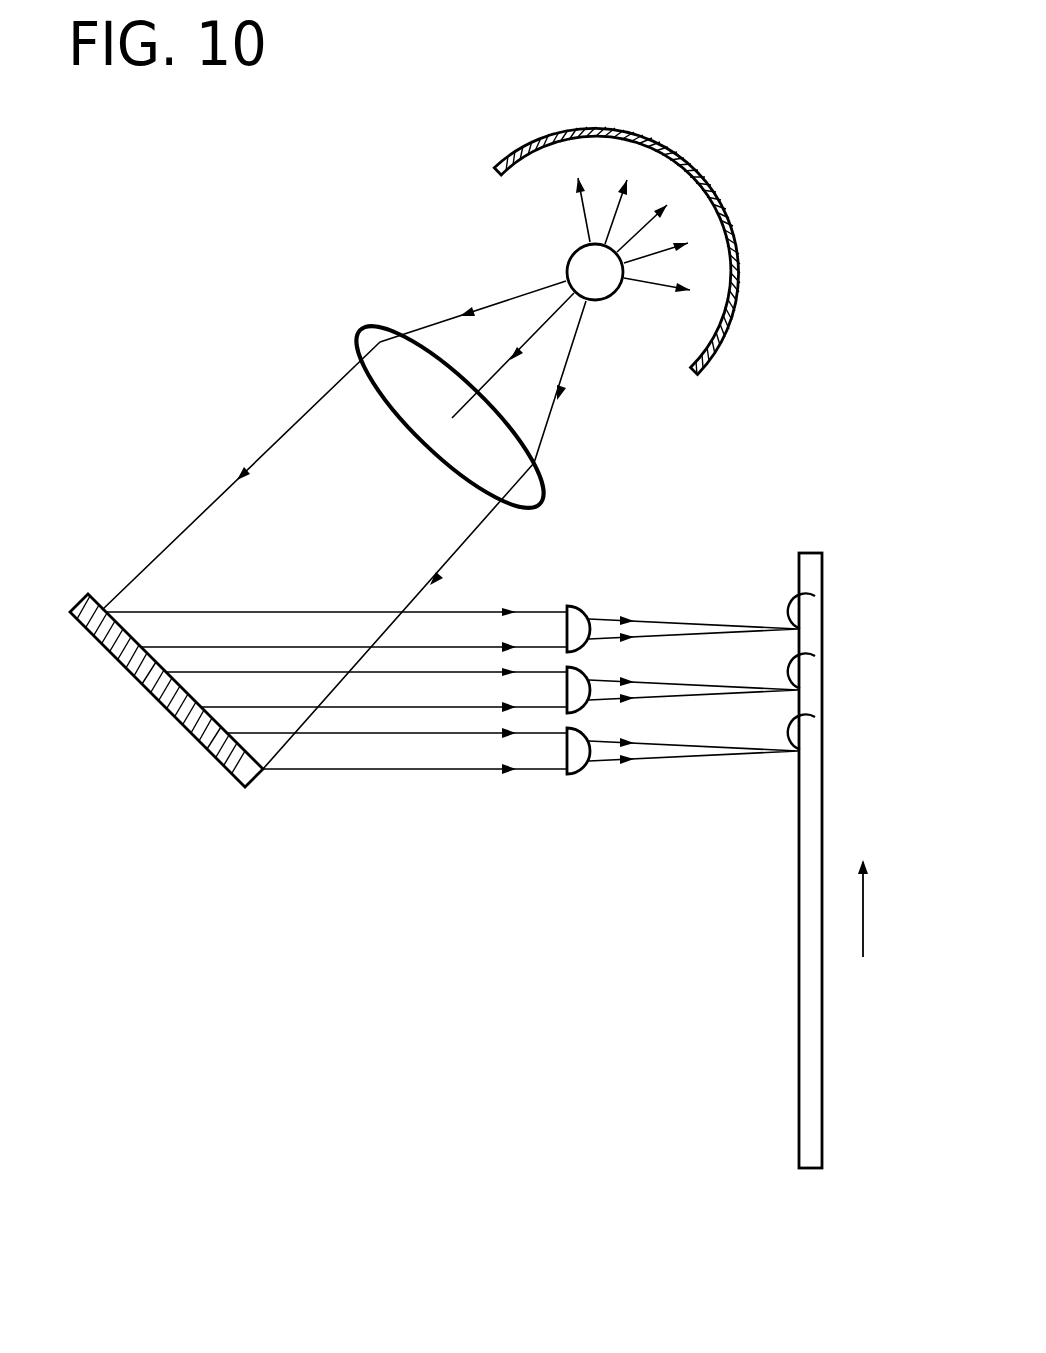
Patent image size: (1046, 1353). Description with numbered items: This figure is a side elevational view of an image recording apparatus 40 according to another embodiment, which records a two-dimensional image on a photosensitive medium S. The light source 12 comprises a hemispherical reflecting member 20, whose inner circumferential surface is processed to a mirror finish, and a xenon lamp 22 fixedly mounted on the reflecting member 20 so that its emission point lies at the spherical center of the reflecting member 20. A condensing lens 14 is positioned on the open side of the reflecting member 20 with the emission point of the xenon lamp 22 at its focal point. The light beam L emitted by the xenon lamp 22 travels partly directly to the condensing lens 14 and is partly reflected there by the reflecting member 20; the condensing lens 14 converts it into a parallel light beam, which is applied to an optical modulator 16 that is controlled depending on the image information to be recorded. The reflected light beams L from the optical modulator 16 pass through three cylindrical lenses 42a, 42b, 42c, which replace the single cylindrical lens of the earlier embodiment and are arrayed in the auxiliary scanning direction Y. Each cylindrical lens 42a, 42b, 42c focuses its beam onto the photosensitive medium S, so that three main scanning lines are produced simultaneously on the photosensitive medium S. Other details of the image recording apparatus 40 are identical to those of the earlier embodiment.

The light source 12 is at (648, 88).
The condensing lens 14 is at (378, 345).
The optical modulator 16 is at (250, 778).
The reflecting member 20 is at (532, 142).
The xenon lamp 22 is at (595, 272).
The image recording apparatus 40 is at (930, 69).
The cylindrical lens 42a is at (587, 620).
The cylindrical lens 42b is at (577, 688).
The cylindrical lens 42c is at (578, 762).
The photosensitive medium S is at (812, 553).
The light beam L is at (510, 298).
The auxiliary scanning direction Y is at (878, 908).